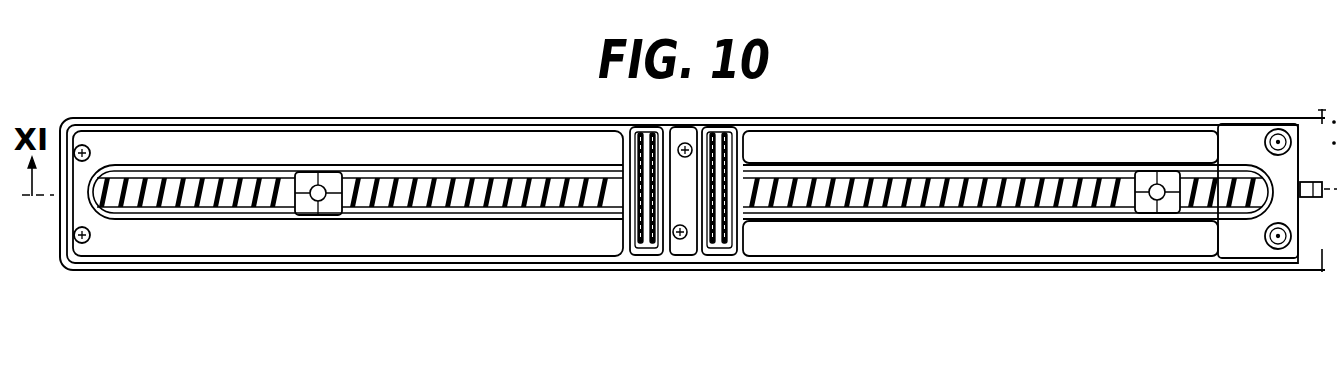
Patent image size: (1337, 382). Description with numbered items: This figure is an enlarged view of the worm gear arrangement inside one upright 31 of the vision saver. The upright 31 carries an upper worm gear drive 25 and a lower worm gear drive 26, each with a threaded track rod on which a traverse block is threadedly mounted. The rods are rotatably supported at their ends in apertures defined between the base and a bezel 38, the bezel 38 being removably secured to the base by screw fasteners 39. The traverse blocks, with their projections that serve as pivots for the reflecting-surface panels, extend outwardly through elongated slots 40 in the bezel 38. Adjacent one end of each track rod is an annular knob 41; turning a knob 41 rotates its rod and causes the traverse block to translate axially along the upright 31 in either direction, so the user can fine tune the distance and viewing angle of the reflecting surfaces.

The upper worm gear drive 25 is at (412, 213).
The lower worm gear drive 26 is at (996, 210).
The upright 31 is at (313, 270).
The bezel 38 is at (211, 243).
The screw fastener 39 is at (88, 145).
The elongated slot 40 is at (542, 212).
The annular knob 41 is at (647, 243).